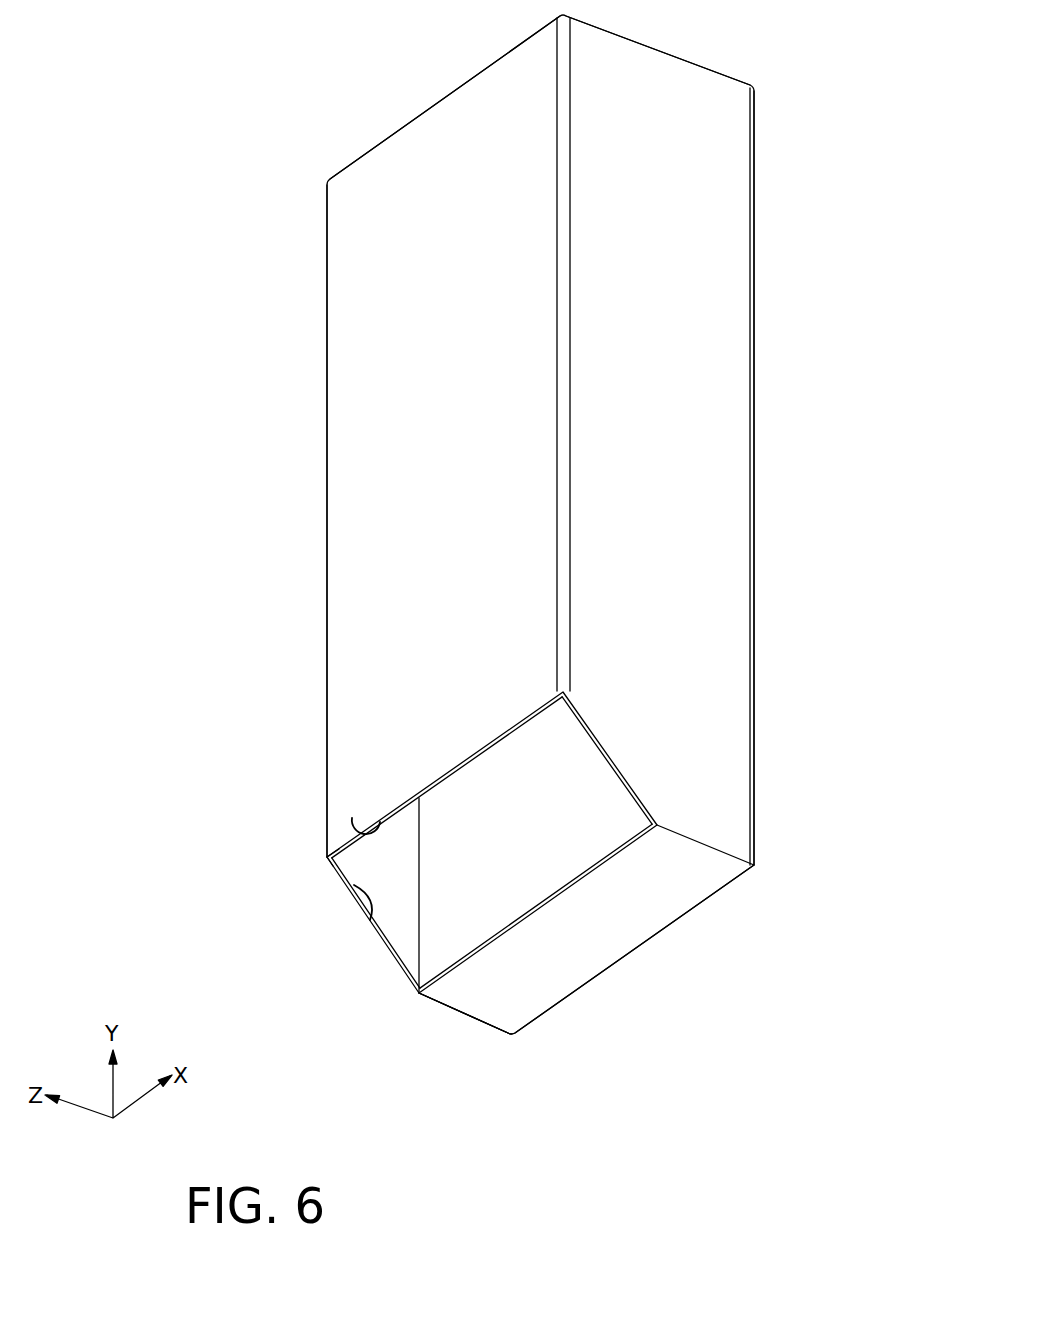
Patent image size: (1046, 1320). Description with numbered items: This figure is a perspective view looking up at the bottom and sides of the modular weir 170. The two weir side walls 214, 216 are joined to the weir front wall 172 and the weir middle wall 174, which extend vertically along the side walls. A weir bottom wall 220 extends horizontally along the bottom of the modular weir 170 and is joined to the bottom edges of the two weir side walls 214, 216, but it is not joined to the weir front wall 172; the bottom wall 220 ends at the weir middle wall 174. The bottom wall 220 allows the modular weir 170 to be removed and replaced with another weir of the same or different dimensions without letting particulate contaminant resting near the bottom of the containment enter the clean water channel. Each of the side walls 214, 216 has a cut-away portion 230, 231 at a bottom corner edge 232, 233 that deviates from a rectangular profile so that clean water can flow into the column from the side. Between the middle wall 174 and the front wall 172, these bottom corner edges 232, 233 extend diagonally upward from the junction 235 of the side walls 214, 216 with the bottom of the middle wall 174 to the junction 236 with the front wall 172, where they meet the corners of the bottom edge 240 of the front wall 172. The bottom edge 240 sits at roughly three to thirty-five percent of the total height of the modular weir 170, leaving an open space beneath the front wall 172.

The modular weir 170 is at (283, 457).
The weir front wall 172 is at (353, 232).
The weir middle wall 174 is at (510, 907).
The weir side wall 214 is at (678, 95).
The weir side wall 216 is at (365, 925).
The weir bottom wall 220 is at (677, 892).
The cut-away portion 230 is at (605, 767).
The cut-away portion 231 is at (372, 973).
The bottom corner edge 232 is at (602, 742).
The bottom corner edge 233 is at (347, 898).
The junction 235 is at (645, 835).
The junction 236 is at (572, 693).
The bottom edge 240 is at (352, 818).